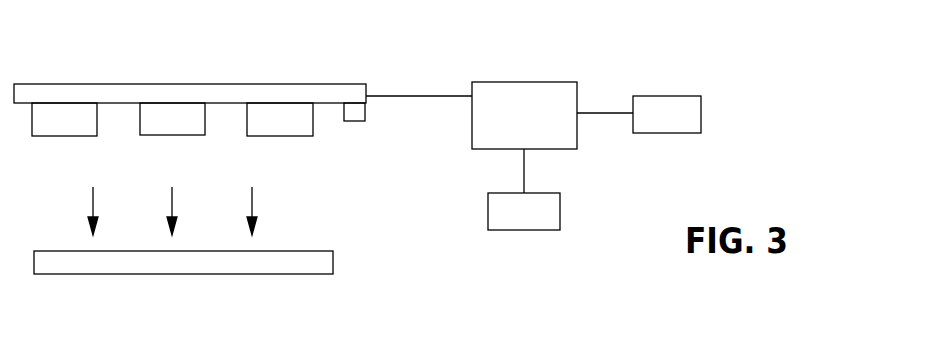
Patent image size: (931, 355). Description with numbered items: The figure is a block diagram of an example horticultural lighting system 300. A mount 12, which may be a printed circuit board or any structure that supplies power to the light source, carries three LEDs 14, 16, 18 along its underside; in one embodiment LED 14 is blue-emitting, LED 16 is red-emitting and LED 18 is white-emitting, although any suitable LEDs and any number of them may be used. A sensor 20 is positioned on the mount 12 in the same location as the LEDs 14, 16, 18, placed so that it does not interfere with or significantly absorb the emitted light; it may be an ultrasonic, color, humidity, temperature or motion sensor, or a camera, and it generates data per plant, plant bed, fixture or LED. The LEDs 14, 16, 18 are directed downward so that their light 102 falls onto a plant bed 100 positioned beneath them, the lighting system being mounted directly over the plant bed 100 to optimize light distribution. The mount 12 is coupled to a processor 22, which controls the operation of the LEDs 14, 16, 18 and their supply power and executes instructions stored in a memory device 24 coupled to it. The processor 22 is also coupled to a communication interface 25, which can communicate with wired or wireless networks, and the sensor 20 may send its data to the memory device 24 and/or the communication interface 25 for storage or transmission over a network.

The horticultural lighting system 300 is at (807, 26).
The mount 12 is at (214, 93).
The LED 14 is at (62, 126).
The LED 16 is at (175, 125).
The LED 18 is at (272, 127).
The sensor 20 is at (356, 111).
The processor 22 is at (535, 129).
The memory device 24 is at (682, 128).
The communication interface 25 is at (560, 216).
The plant bed 100 is at (325, 266).
The light 102 is at (254, 201).